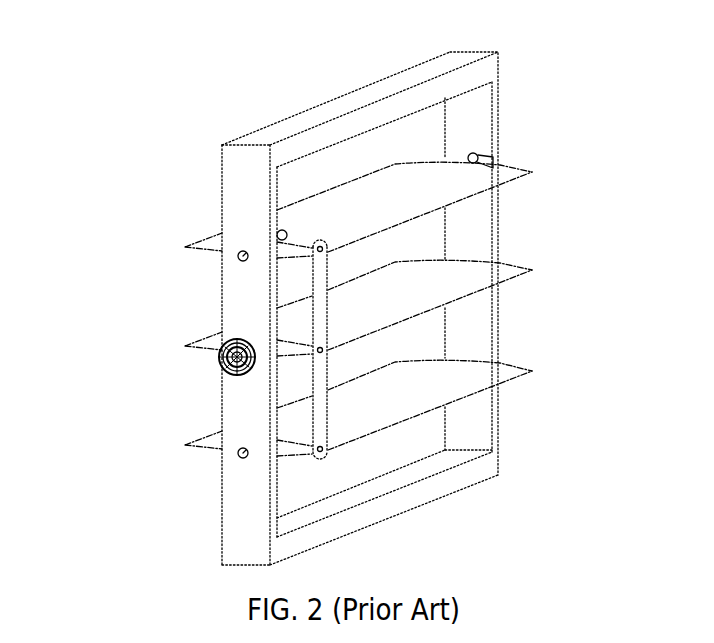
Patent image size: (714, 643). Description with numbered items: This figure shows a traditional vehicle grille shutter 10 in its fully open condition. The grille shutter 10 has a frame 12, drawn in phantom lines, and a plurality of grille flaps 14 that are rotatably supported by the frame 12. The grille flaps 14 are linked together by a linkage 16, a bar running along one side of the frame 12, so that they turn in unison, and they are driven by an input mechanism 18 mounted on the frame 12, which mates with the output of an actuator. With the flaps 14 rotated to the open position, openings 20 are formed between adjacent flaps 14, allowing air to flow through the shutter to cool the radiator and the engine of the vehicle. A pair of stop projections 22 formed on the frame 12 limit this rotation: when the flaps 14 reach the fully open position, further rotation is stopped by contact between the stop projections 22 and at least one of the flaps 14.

The vehicle grille shutter 10 is at (166, 112).
The frame 12 is at (482, 466).
The grille flaps 14 is at (494, 172).
The linkage 16 is at (327, 413).
The input mechanism 18 is at (223, 343).
The openings 20 is at (417, 240).
The stop projections 22 is at (281, 230).